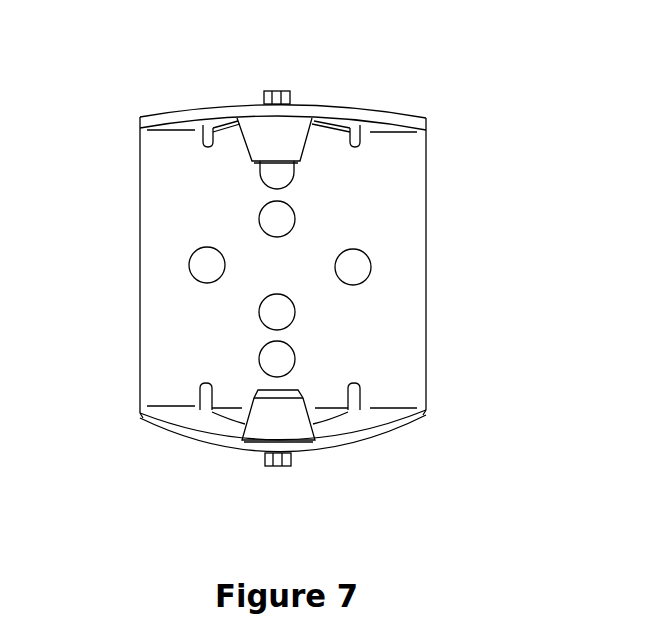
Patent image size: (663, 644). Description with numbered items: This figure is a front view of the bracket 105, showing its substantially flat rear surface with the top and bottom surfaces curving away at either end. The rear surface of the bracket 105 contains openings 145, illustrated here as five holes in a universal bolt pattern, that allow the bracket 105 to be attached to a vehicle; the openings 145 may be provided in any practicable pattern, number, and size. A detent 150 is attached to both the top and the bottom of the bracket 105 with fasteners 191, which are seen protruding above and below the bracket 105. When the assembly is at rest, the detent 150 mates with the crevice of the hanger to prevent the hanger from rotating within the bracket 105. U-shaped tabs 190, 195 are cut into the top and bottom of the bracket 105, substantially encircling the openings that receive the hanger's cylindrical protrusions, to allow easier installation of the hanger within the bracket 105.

The bracket 105 is at (446, 70).
The openings 145 is at (258, 312).
The detent 150 is at (307, 153).
The U-shaped tab 190 is at (201, 141).
The fasteners 191 is at (276, 88).
The U-shaped tab 195 is at (198, 392).